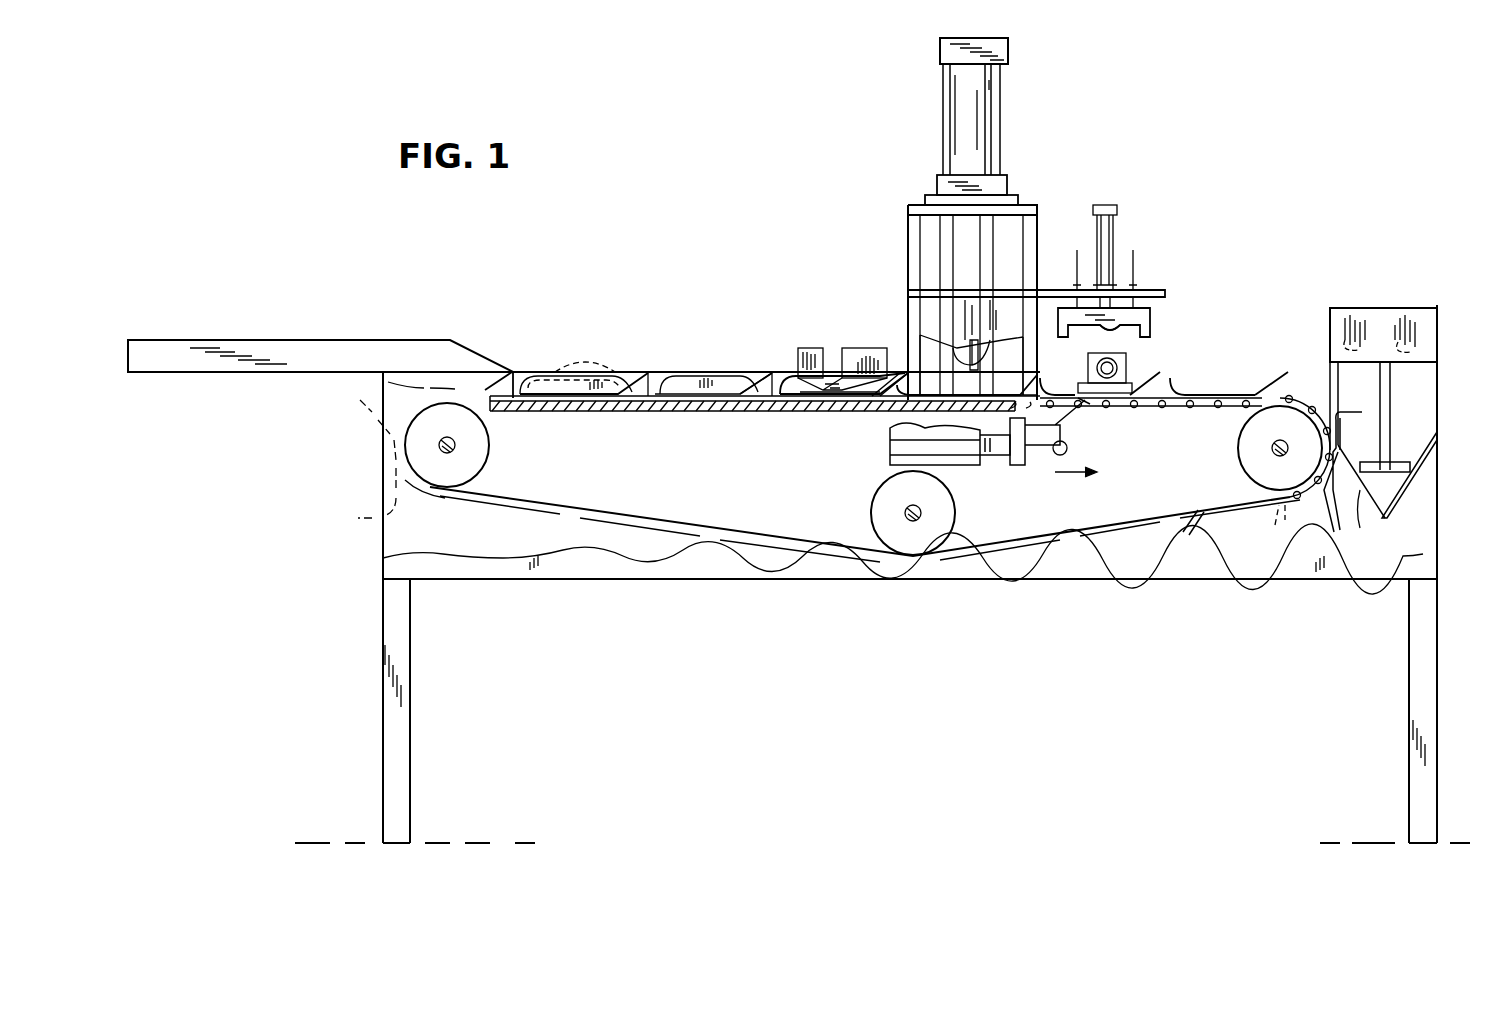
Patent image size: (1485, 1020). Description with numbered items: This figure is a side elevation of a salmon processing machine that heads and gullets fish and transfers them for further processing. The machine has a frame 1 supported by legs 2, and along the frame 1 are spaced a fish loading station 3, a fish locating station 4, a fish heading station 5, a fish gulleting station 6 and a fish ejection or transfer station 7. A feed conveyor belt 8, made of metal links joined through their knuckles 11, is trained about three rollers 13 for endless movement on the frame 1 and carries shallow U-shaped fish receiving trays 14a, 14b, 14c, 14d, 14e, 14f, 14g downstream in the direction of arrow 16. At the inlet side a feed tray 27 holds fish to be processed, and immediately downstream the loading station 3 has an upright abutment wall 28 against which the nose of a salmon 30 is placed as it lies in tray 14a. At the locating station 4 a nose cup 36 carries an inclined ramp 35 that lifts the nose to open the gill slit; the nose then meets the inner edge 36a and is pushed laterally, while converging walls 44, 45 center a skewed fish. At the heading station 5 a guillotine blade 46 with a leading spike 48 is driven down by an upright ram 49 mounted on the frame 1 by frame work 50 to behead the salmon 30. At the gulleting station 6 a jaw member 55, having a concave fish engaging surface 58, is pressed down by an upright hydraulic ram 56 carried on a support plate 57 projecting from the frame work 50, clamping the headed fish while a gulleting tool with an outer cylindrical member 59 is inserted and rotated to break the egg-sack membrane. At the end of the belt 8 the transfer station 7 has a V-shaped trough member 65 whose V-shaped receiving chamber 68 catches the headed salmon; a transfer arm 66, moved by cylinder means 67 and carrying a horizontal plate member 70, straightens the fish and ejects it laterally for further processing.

The frame 1 is at (660, 412).
The legs 2 is at (383, 650).
The fish loading station 3 is at (584, 320).
The fish locating station 4 is at (848, 312).
The fish heading station 5 is at (888, 226).
The fish gulleting station 6 is at (1136, 213).
The fish ejection or transfer station 7 is at (1395, 262).
The feed conveyor belt 8 is at (680, 516).
The knuckles 11 is at (1192, 408).
The rollers 13 is at (488, 455).
The fish receiving tray 14a is at (540, 372).
The fish receiving tray 14b is at (746, 372).
The fish receiving tray 14c is at (897, 384).
The fish receiving tray 14d is at (895, 400).
The fish receiving tray 14e is at (1144, 393).
The fish receiving tray 14f is at (1274, 384).
The fish receiving tray 14g is at (1317, 520).
The arrow 16 is at (676, 347).
The feed tray 27 is at (344, 340).
The upright abutment wall 28 is at (689, 372).
The salmon 30 is at (586, 372).
The inclined ramp 35 is at (833, 392).
The nose cup 36 is at (825, 392).
The inner edge 36a is at (828, 356).
The vertically extending wall 44 is at (856, 355).
The vertically extending wall 45 is at (805, 386).
The guillotine blade 46 is at (971, 366).
The spike 48 is at (960, 352).
The upright hydraulic or pneumatic ram 49 is at (992, 111).
The frame work 50 is at (1030, 205).
The jaw member 55 is at (1150, 318).
The upright hydraulic ram 56 is at (1115, 229).
The support plate 57 is at (1165, 290).
The concave fish engaging surface 58 is at (1150, 334).
The outer cylindrical member 59 is at (1087, 366).
The V-shaped trough member 65 is at (1398, 512).
The transfer arm 66 is at (1390, 407).
The cylinder means 67 is at (1402, 317).
The V-shaped receiving chamber 68 is at (1398, 479).
The plate member 70 is at (1358, 478).